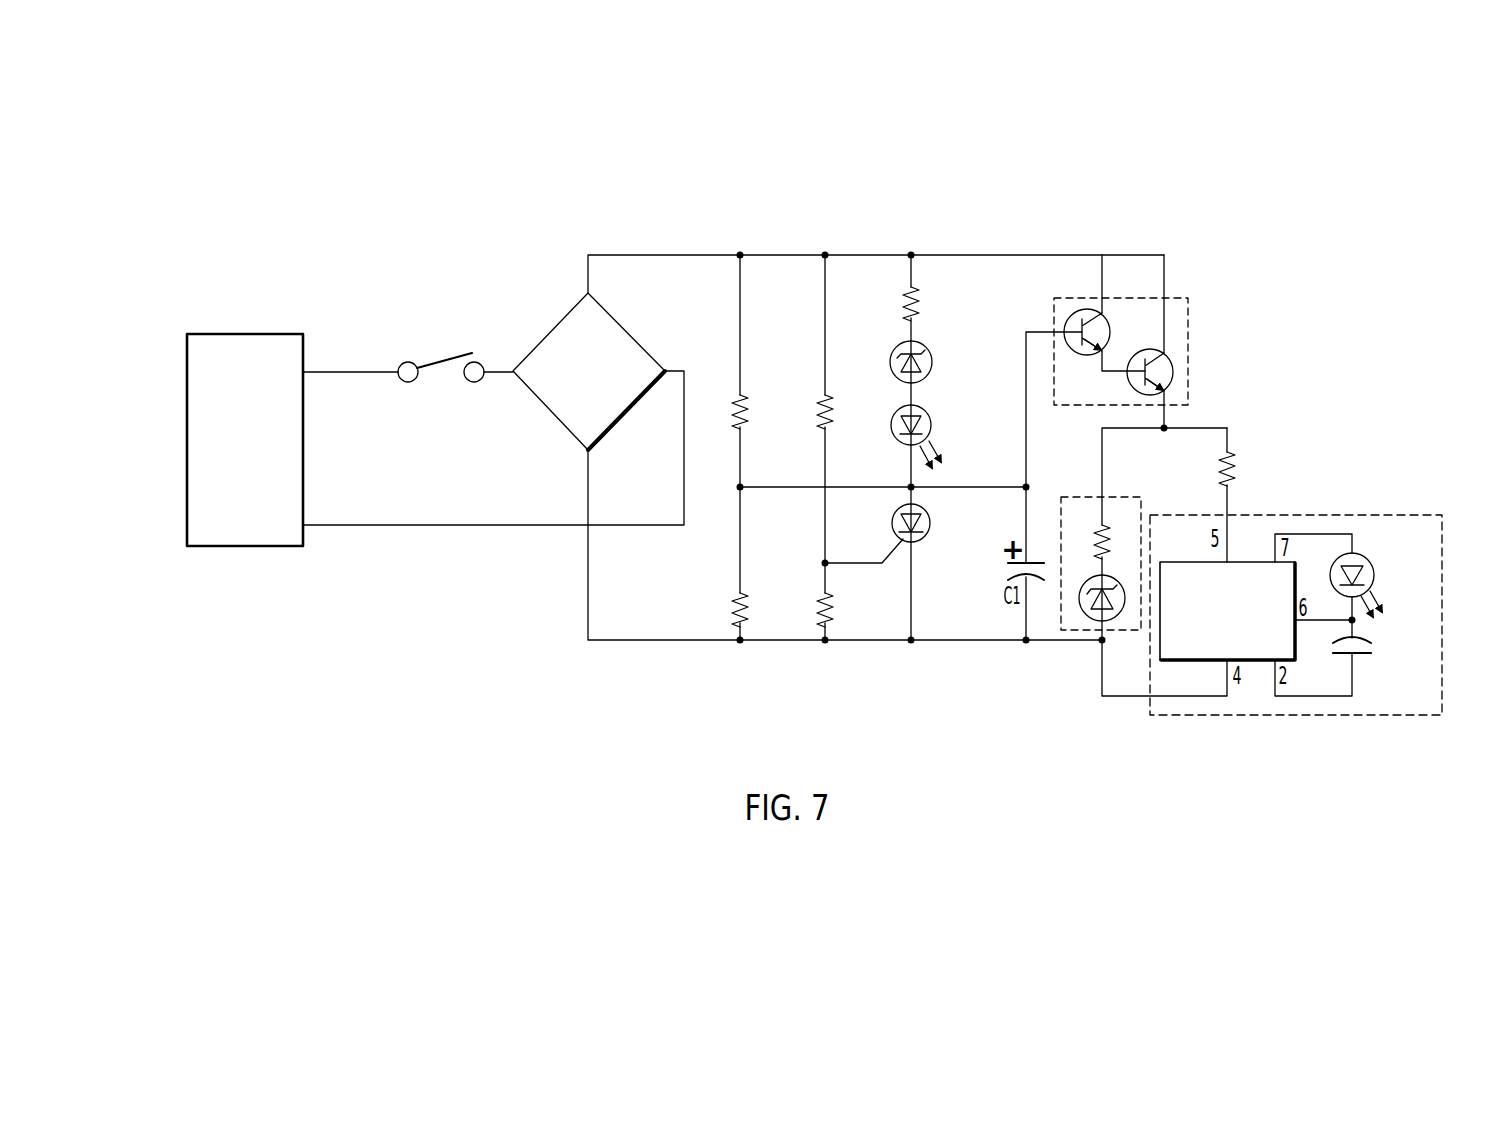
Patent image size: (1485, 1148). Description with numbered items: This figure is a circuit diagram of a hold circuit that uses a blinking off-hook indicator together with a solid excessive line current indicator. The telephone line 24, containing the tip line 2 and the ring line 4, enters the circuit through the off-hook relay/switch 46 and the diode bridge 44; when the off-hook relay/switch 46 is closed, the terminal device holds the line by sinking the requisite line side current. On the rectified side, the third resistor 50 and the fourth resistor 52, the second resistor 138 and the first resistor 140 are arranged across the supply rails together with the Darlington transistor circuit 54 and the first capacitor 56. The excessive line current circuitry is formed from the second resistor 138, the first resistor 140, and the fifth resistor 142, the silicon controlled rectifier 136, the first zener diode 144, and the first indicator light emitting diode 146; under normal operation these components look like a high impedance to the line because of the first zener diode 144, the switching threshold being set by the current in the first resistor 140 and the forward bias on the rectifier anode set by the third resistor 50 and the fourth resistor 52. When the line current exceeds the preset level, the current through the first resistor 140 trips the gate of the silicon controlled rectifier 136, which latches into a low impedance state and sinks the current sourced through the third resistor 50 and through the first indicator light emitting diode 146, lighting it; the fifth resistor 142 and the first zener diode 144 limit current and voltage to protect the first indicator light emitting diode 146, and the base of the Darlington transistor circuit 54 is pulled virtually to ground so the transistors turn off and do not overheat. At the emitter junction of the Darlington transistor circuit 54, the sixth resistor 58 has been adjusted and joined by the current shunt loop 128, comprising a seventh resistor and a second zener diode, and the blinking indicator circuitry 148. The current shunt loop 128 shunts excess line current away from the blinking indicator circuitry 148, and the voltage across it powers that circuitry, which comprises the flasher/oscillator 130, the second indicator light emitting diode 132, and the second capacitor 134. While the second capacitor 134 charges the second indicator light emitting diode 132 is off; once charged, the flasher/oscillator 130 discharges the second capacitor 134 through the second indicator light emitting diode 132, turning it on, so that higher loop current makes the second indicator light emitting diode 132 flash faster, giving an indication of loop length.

The telephone line 24 is at (247, 333).
The tip line 2 is at (370, 372).
The ring line 4 is at (370, 525).
The off-hook relay/switch 46 is at (474, 382).
The diode bridge 44 is at (618, 323).
The resistor R3 50 is at (735, 395).
The resistor R4 52 is at (735, 594).
The resistor R1 140 is at (820, 396).
The resistor R2 138 is at (820, 594).
The resistor R5 142 is at (906, 304).
The zener diode ZD1 144 is at (894, 356).
The indicator LED1 146 is at (897, 411).
The SCR 136 is at (930, 525).
The Darlington transistor circuit Q1 54 is at (1180, 300).
The current shunt loop 128 is at (1118, 497).
The capacitor C1 56 is at (1038, 560).
The resistor R6 58 is at (1240, 458).
The blinking indicator circuitry 148 is at (1252, 707).
The flasher/oscillator 130 is at (1213, 653).
The indicator LED2 132 is at (1368, 557).
The capacitor C2 134 is at (1362, 656).